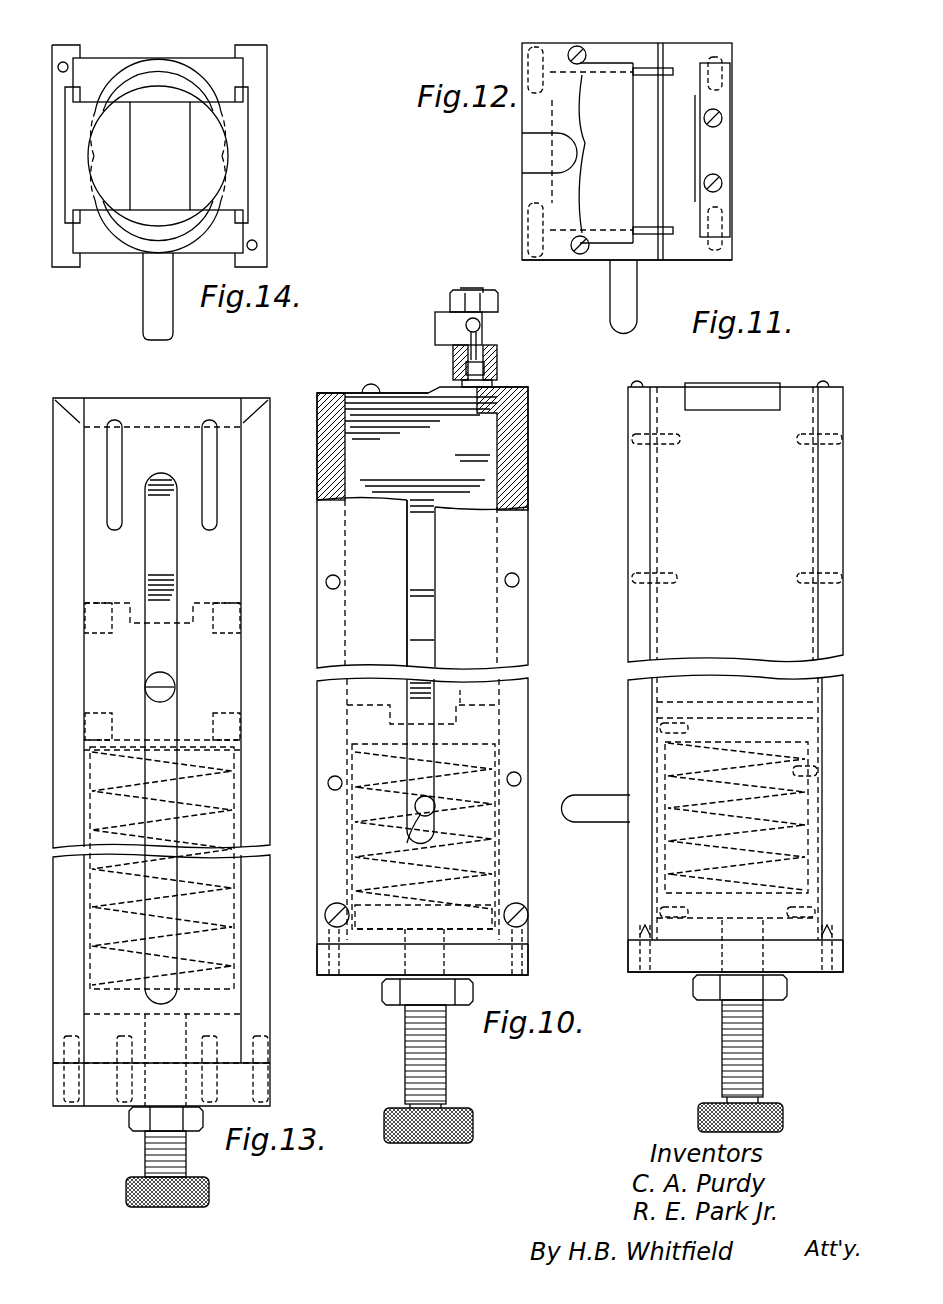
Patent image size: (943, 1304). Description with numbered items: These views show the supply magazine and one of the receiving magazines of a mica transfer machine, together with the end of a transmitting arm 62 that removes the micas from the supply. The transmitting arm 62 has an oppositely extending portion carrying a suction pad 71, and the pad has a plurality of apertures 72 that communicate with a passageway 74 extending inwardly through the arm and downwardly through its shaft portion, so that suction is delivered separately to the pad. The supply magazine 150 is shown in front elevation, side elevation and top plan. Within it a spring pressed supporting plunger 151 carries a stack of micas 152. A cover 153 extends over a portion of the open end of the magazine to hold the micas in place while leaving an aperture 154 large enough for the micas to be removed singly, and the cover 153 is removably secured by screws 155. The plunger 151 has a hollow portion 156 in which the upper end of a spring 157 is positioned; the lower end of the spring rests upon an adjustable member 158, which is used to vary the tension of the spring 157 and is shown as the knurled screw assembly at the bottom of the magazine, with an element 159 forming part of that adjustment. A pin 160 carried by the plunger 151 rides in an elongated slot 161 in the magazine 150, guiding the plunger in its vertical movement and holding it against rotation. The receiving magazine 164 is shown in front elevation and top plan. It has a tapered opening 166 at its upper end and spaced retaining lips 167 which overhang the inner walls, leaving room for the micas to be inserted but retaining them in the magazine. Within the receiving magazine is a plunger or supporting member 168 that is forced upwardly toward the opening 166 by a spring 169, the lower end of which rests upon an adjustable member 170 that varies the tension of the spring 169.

In FIG. 10, the transmitting arm 62 is at (423, 314).
In FIG. 10, the suction pad 71 is at (492, 352).
In FIG. 10, the aperture 72 is at (495, 372).
In FIG. 10, the passageway 74 is at (492, 329).
In FIG. 12, the supply magazine 150 is at (732, 210).
In FIG. 11, the supply magazine 150 is at (632, 558).
In FIG. 10, the supply magazine 150 is at (515, 525).
In FIG. 11, the supporting plunger 151 is at (785, 700).
In FIG. 10, the supporting plunger 151 is at (465, 690).
In FIG. 11, the micas 152 is at (685, 476).
In FIG. 10, the micas 152 is at (478, 455).
In FIG. 13, the micas 152 is at (145, 477).
In FIG. 12, the cover 153 is at (557, 247).
In FIG. 10, the cover 153 is at (330, 393).
In FIG. 12, the aperture 154 is at (678, 145).
In FIG. 12, the screws 155 is at (590, 147).
In FIG. 11, the screws 155 is at (825, 383).
In FIG. 10, the screws 155 is at (372, 385).
In FIG. 11, the hollow portion 156 is at (665, 785).
In FIG. 10, the hollow portion 156 is at (462, 750).
In FIG. 11, the spring 157 is at (690, 855).
In FIG. 10, the spring 157 is at (468, 860).
In FIG. 11, the adjustable member 158 is at (700, 935).
In FIG. 10, the adjustable member 158 is at (478, 950).
In FIG. 11, the adjusting screw 159 is at (765, 1060).
In FIG. 10, the adjusting screw 159 is at (446, 1065).
In FIG. 12, the pin 160 is at (627, 300).
In FIG. 11, the pin 160 is at (575, 795).
In FIG. 10, the pin 160 is at (407, 835).
In FIG. 10, the elongated slot 161 is at (425, 558).
In FIG. 14, the receiving magazine 164 is at (162, 247).
In FIG. 13, the receiving magazine 164 is at (270, 690).
In FIG. 14, the tapered opening 166 is at (243, 135).
In FIG. 13, the tapered opening 166 is at (247, 407).
In FIG. 14, the retaining lips 167 is at (152, 90).
In FIG. 13, the plunger 168 is at (193, 650).
In FIG. 13, the spring 169 is at (215, 800).
In FIG. 13, the adjustable member 170 is at (205, 1010).